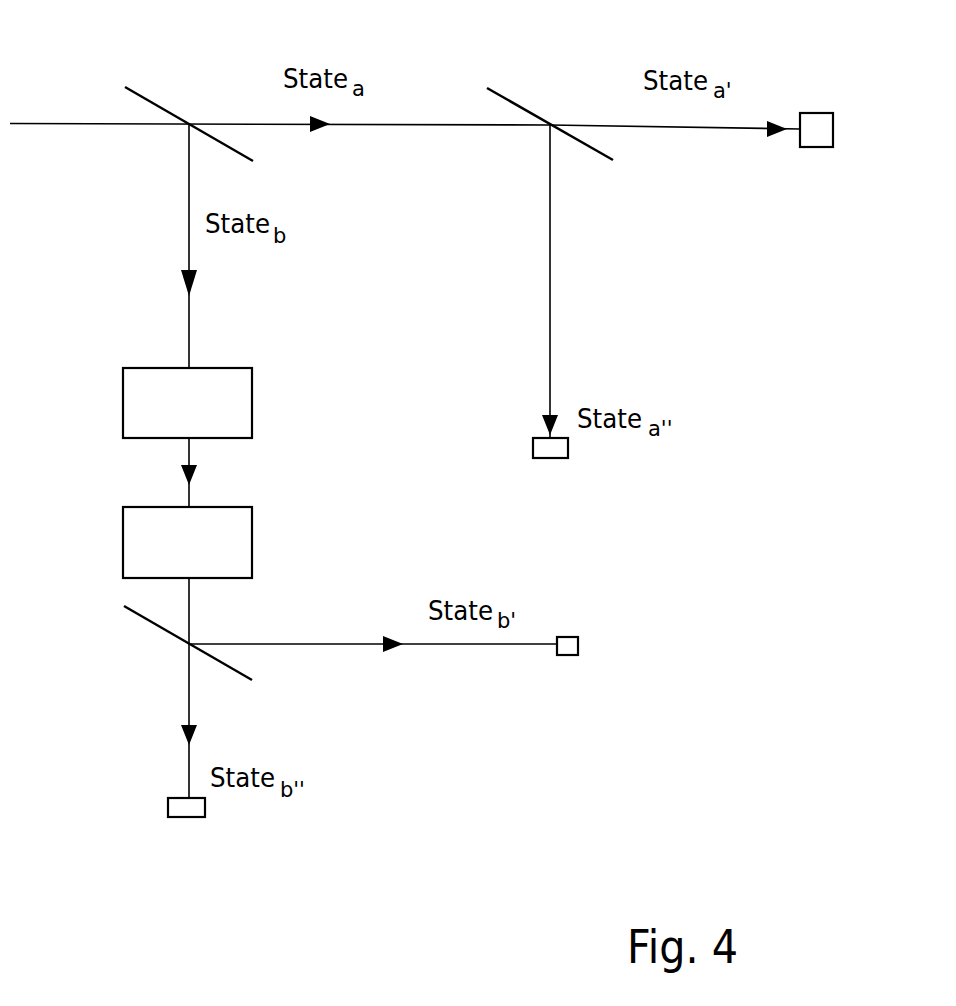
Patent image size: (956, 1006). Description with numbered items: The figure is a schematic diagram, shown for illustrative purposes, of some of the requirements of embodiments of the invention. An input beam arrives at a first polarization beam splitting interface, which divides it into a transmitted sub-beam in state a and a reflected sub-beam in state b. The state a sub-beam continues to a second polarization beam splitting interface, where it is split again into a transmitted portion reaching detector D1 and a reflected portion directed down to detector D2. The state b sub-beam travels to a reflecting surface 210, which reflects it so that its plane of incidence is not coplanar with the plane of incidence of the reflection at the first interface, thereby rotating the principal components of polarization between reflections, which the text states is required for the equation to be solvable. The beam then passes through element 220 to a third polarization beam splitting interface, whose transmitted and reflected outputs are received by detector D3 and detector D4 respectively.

The reflecting surface 210 is at (218, 377).
The second optical element 220 is at (218, 520).
The detector D1 is at (845, 135).
The detector D2 is at (551, 469).
The detector D3 is at (591, 650).
The detector D4 is at (186, 830).